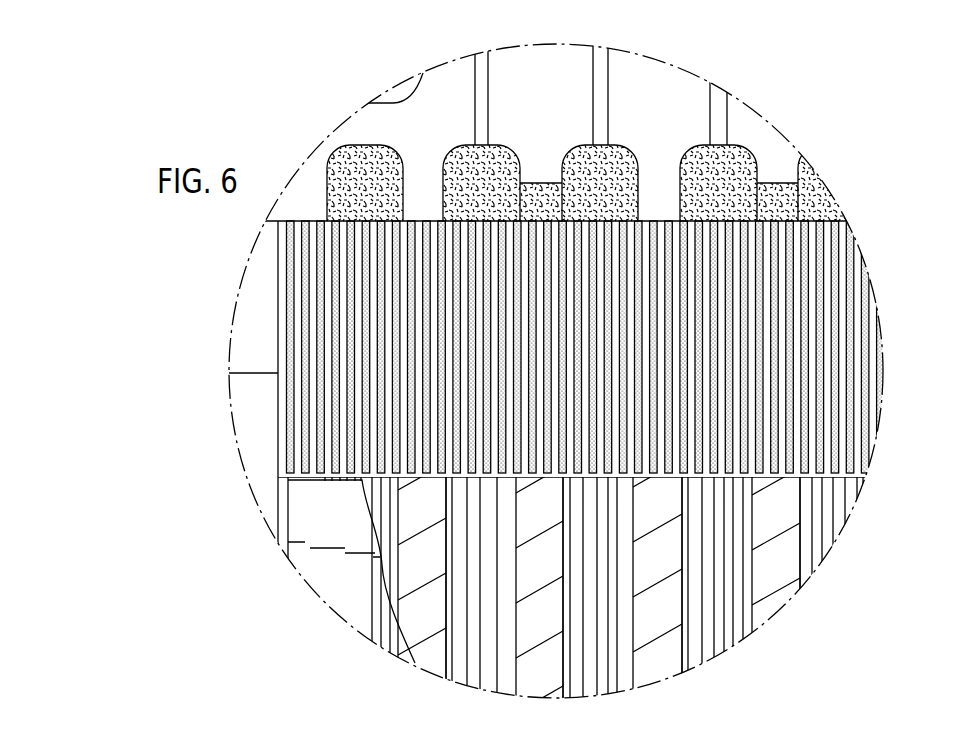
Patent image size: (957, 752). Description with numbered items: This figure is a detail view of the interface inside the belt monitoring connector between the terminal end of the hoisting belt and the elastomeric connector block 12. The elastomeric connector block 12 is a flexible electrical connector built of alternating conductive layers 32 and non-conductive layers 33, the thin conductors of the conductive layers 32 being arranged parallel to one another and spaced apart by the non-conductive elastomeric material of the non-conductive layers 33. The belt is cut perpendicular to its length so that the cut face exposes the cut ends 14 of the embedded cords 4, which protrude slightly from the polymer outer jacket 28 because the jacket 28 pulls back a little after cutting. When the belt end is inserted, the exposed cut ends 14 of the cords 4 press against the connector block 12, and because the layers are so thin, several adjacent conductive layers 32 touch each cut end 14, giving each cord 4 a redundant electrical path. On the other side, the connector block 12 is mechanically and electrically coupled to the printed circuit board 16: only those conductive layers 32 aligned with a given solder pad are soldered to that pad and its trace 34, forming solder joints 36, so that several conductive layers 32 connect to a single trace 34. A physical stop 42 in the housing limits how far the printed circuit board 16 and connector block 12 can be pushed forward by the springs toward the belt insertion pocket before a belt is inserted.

The cord 4 is at (612, 652).
The elastomeric connector block 12 is at (278, 268).
The exposed cut end 14 is at (752, 478).
The printed circuit board 16 is at (652, 77).
The polymer outer jacket 28 is at (415, 627).
The conductive layer 32 is at (288, 335).
The non-conductive layer 33 is at (283, 458).
The trace 34 is at (718, 108).
The solder joint 36 is at (738, 168).
The physical stop 42 is at (255, 373).